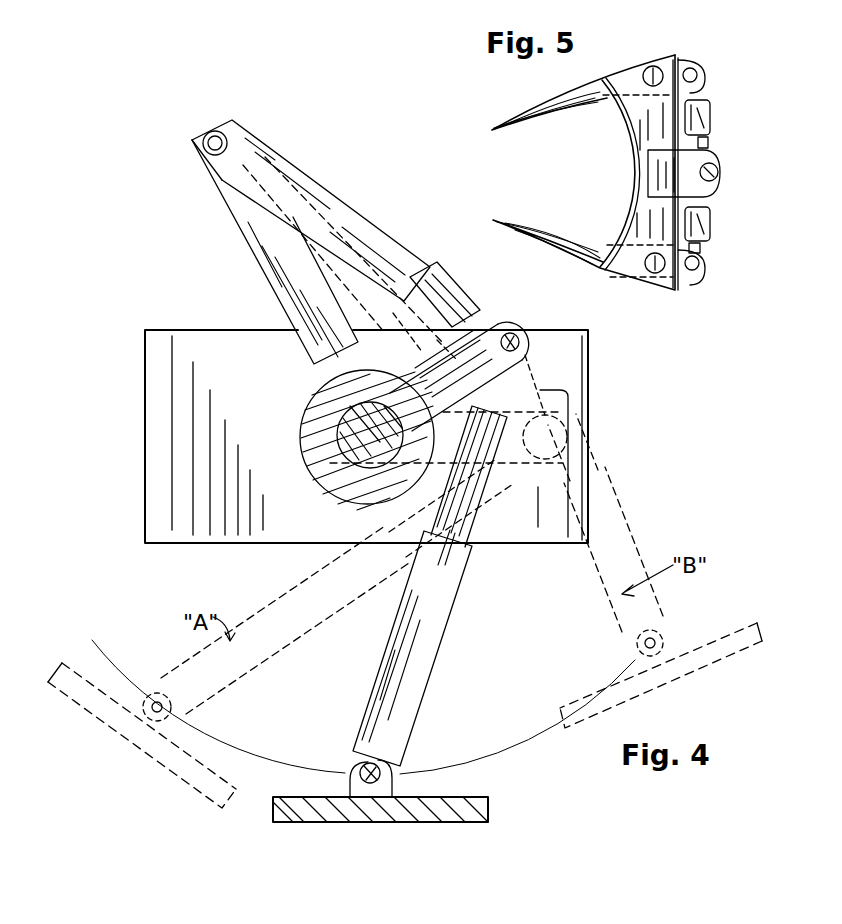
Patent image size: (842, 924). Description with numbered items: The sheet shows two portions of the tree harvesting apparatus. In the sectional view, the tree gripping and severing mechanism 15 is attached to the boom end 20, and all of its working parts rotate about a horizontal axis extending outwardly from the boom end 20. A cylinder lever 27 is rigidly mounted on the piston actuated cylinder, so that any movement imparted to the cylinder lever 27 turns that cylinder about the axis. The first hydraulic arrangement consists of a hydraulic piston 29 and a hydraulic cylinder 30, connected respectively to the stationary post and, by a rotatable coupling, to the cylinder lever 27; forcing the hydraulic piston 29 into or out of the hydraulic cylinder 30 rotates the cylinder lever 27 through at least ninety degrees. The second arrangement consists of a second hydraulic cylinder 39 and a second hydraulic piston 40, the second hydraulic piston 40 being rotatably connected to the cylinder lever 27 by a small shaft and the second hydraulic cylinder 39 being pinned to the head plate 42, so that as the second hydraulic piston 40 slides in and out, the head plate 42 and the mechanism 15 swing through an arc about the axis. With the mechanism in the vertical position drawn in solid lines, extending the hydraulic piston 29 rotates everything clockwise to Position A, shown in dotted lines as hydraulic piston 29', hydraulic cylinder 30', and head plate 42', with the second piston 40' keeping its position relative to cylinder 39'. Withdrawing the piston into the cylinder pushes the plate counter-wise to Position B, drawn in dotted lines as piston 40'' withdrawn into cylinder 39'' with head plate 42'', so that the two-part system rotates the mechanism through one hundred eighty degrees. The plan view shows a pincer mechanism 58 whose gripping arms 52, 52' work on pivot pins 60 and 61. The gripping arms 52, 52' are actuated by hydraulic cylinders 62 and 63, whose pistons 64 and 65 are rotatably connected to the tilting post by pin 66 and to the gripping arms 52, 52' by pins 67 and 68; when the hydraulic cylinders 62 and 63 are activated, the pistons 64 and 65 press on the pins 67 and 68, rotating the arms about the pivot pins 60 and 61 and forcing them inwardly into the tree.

In FIG. 4, the tree gripping and severing mechanism 15 is at (608, 447).
In FIG. 4, the boom end 20 is at (268, 399).
In FIG. 4, the cylinder lever 27 is at (513, 327).
In FIG. 4, the hydraulic piston 29 is at (454, 294).
In FIG. 4, the hydraulic piston (Position A) 29' is at (415, 340).
In FIG. 4, the hydraulic cylinder 30 is at (317, 231).
In FIG. 4, the hydraulic cylinder (Position A) 30' is at (275, 252).
In FIG. 4, the second hydraulic cylinder 39 is at (417, 648).
In FIG. 4, the second hydraulic cylinder (Position A) 39' is at (285, 620).
In FIG. 4, the second hydraulic cylinder (Position B) 39'' is at (623, 549).
In FIG. 4, the second hydraulic piston 40 is at (471, 476).
In FIG. 4, the second hydraulic piston (Position A) 40' is at (436, 508).
In FIG. 4, the second hydraulic piston (Position B) 40'' is at (595, 426).
In FIG. 4, the head plate 42 is at (380, 806).
In FIG. 4, the head plate (Position A) 42' is at (142, 740).
In FIG. 4, the head plate (Position B) 42'' is at (661, 675).
In FIG. 5, the gripping arm 52 is at (547, 244).
In FIG. 5, the gripping arm 52' is at (546, 104).
In FIG. 5, the pincer mechanism 58 is at (612, 170).
In FIG. 5, the pivot pin 60 is at (665, 290).
In FIG. 5, the pivot pin 61 is at (660, 45).
In FIG. 5, the hydraulic cylinder 62 is at (712, 220).
In FIG. 5, the hydraulic cylinder 63 is at (710, 113).
In FIG. 5, the piston 64 is at (702, 248).
In FIG. 5, the piston 65 is at (708, 141).
In FIG. 5, the pin 66 is at (720, 172).
In FIG. 5, the pin 67 is at (702, 273).
In FIG. 5, the pin 68 is at (701, 75).